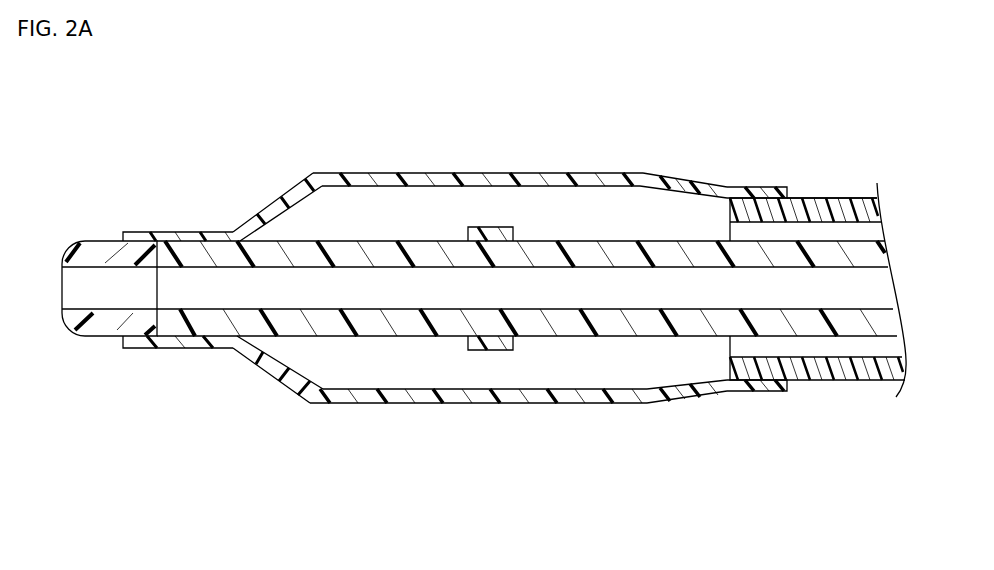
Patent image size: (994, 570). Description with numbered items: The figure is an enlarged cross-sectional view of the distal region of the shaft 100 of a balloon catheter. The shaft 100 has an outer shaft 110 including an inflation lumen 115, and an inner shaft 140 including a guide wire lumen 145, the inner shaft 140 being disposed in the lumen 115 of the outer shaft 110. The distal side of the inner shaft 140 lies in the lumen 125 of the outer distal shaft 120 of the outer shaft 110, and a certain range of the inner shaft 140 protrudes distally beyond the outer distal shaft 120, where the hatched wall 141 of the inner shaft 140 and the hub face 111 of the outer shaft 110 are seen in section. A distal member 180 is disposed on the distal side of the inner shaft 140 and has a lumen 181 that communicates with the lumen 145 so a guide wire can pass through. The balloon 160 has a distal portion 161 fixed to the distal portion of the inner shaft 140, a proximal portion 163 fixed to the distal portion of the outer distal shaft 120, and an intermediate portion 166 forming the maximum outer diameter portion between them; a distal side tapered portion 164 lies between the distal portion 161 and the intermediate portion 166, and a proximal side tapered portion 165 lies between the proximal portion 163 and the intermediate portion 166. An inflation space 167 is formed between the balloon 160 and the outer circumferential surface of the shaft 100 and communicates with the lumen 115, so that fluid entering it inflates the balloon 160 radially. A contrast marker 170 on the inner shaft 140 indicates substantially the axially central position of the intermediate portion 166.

The shaft 100 is at (544, 330).
The outer shaft 110 is at (795, 307).
The hub front surface 111 is at (776, 196).
The lumen (inflation lumen) 115 is at (831, 395).
The outer distal shaft 120 is at (795, 307).
The lumen 125 is at (831, 395).
The inner shaft 140 is at (527, 322).
The inner tube wall 141 is at (197, 255).
The lumen (guide wire lumen) 145 is at (541, 297).
The balloon 160 is at (513, 247).
The distal portion 161 is at (167, 237).
The proximal portion 163 is at (744, 192).
The distal side tapered portion 164 is at (277, 210).
The proximal side tapered portion 165 is at (690, 185).
The intermediate portion 166 is at (468, 183).
The inflation space 167 is at (358, 208).
The contrast marker 170 is at (488, 351).
The distal member 180 is at (100, 325).
The lumen 181 is at (105, 285).